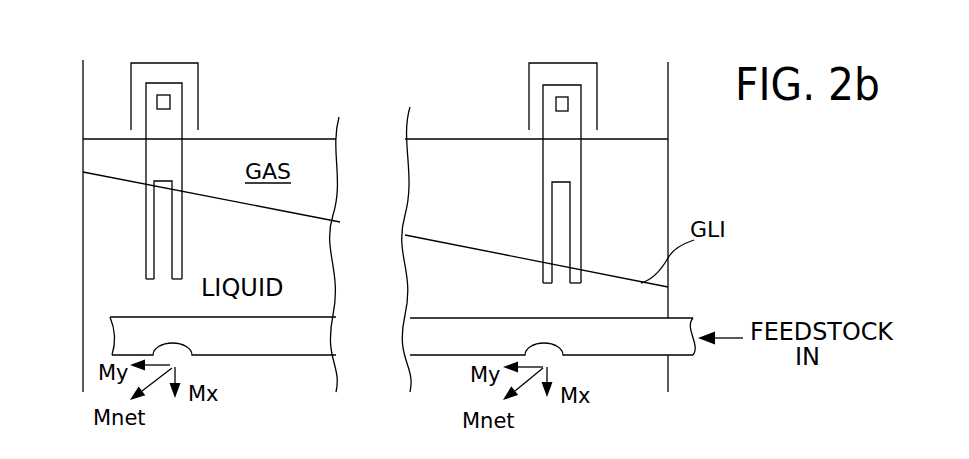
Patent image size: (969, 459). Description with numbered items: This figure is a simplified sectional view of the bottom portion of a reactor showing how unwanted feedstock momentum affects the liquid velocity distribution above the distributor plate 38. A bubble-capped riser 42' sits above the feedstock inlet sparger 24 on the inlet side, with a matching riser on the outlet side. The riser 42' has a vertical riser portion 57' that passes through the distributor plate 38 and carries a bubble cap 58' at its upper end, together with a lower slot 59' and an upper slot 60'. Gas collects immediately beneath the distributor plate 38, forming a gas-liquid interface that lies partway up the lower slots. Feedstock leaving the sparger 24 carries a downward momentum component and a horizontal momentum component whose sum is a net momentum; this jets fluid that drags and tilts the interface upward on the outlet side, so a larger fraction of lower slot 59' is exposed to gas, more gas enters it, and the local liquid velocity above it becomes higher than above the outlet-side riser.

The distributor plate 38 is at (104, 139).
The bubble cap 58' is at (578, 76).
The upper slot 60' is at (604, 94).
The bubble-capped riser 42' is at (678, 33).
The vertical riser portion 57' is at (597, 184).
The lower slot 59' is at (535, 248).
The feedstock inlet sparger 24 is at (684, 318).